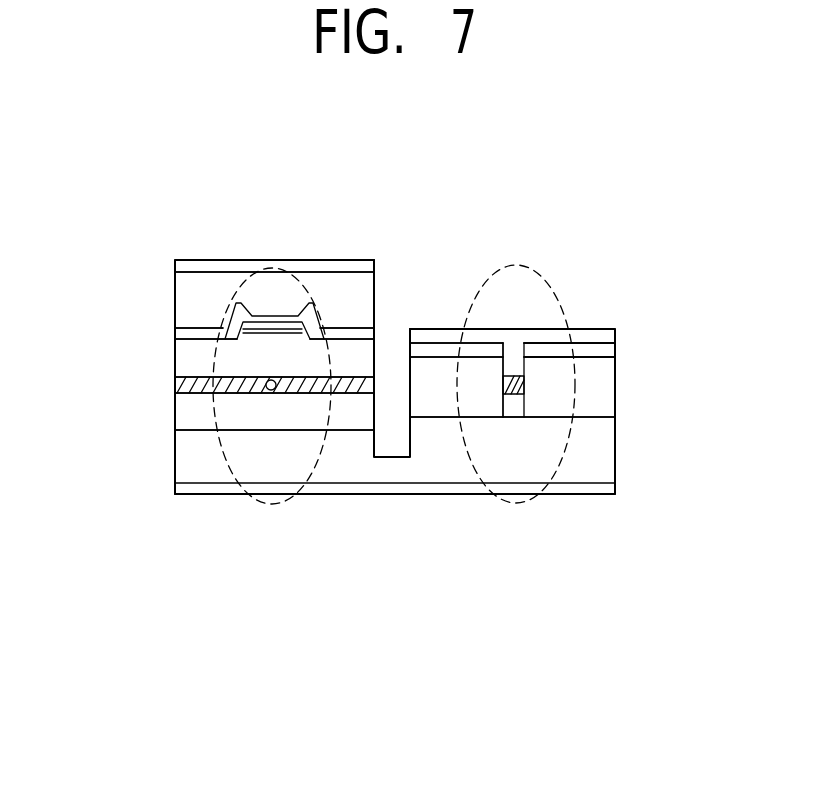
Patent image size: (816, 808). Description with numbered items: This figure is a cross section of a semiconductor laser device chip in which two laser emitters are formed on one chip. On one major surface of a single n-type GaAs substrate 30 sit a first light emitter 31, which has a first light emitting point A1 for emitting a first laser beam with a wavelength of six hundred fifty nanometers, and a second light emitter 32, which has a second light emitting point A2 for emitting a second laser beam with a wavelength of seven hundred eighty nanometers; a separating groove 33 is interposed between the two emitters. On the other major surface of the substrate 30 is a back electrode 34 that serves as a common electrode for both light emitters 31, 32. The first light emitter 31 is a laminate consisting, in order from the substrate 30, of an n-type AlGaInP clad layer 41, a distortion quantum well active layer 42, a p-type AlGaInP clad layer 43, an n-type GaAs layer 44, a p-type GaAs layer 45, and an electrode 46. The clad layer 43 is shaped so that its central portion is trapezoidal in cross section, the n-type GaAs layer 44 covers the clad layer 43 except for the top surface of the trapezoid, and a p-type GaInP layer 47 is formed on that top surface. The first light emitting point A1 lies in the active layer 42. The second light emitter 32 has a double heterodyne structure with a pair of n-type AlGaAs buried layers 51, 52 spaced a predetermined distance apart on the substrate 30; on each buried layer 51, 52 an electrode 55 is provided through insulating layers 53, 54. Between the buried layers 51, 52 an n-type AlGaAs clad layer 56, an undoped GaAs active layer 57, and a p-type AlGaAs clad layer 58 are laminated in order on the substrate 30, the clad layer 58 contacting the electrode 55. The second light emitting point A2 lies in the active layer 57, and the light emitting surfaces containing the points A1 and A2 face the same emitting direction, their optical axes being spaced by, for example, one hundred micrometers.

The n-type GaAs substrate 30 is at (187, 465).
The first light emitter 31 is at (186, 195).
The second light emitter 32 is at (590, 318).
The separating groove 33 is at (388, 338).
The back electrode 34 is at (383, 490).
The n-type AlGaInP clad layer 41 is at (187, 413).
The distortion quantum well active layer 42 is at (175, 385).
The p-type AlGaInP clad layer 43 is at (180, 362).
The n-type GaAs layer 44 is at (180, 333).
The p-type GaAs layer 45 is at (180, 302).
The electrode 46 is at (177, 268).
The p-type GaInP layer 47 is at (270, 325).
The n-type AlGaAs buried layer 51 is at (425, 378).
The n-type AlGaAs buried layer 52 is at (607, 385).
The insulating layer 53 is at (445, 348).
The insulating layer 54 is at (615, 348).
The electrode 55 is at (615, 337).
The n-type AlGaAs clad layer 56 is at (513, 407).
The undoped GaAs active layer 57 is at (503, 388).
The p-type AlGaAs clad layer 58 is at (513, 365).
The first light emitting point A1 is at (272, 391).
The second light emitting point A2 is at (527, 386).